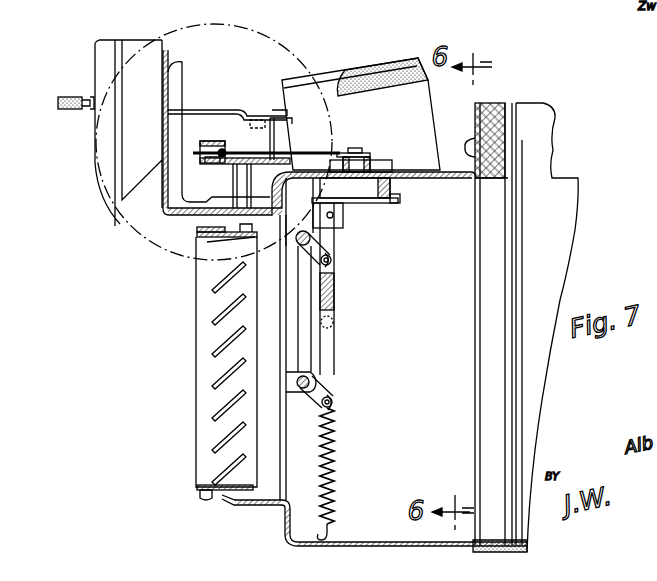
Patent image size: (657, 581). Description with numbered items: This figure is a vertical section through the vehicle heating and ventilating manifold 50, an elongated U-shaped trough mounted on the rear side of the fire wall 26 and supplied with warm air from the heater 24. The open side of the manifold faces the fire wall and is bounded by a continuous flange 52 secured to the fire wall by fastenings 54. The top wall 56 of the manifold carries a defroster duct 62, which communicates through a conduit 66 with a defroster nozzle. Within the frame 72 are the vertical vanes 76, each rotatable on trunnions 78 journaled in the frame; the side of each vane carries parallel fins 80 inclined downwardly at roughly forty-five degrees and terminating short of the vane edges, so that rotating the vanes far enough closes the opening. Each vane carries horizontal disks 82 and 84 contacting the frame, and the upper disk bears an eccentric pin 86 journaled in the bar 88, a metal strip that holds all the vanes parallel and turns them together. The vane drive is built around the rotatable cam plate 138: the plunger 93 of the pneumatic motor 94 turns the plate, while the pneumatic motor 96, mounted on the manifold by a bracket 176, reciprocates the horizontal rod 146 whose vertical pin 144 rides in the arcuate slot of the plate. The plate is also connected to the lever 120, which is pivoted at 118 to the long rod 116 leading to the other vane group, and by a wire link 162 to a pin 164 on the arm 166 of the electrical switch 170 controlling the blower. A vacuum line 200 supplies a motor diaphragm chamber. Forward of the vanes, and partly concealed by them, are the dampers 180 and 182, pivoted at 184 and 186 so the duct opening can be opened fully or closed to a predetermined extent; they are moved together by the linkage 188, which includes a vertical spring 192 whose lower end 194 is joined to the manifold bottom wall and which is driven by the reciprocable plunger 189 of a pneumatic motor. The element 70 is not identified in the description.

The heater 24 is at (556, 196).
The fire wall 26 is at (495, 180).
The manifold 50 is at (288, 546).
The flange 52 is at (477, 110).
The fastenings 54 is at (468, 150).
The top wall 56 is at (476, 186).
The defroster duct 62 is at (390, 93).
The conduit 66 is at (342, 78).
The channel 70 is at (280, 516).
The frame 72 is at (228, 502).
The vanes 76 is at (203, 358).
The trunnions 78 is at (206, 496).
The fins 80 is at (214, 323).
The disk 82 is at (208, 485).
The disk 84 is at (235, 252).
The pin 86 is at (278, 176).
The bar 88 is at (240, 233).
The plunger 93 is at (216, 141).
The pneumatic motor 94 is at (127, 230).
The pneumatic motor 96 is at (108, 60).
The rod 116 is at (240, 253).
The pivot 118 is at (343, 220).
The lever 120 is at (370, 203).
The cam plate 138 is at (278, 120).
The pin 144 is at (252, 112).
The rod 146 is at (210, 110).
The wire link 162 is at (342, 157).
The pin 164 is at (345, 157).
The arm 166 is at (373, 163).
The electrical switch 170 is at (400, 198).
The bracket 176 is at (176, 62).
The damper 180 is at (284, 305).
The damper 182 is at (287, 440).
The pivot 184 is at (330, 262).
The pivot 186 is at (318, 376).
The linkage 188 is at (336, 305).
The plunger 189 is at (333, 255).
The spring 192 is at (338, 452).
The lower end 194 is at (335, 534).
The vacuum line 200 is at (72, 112).